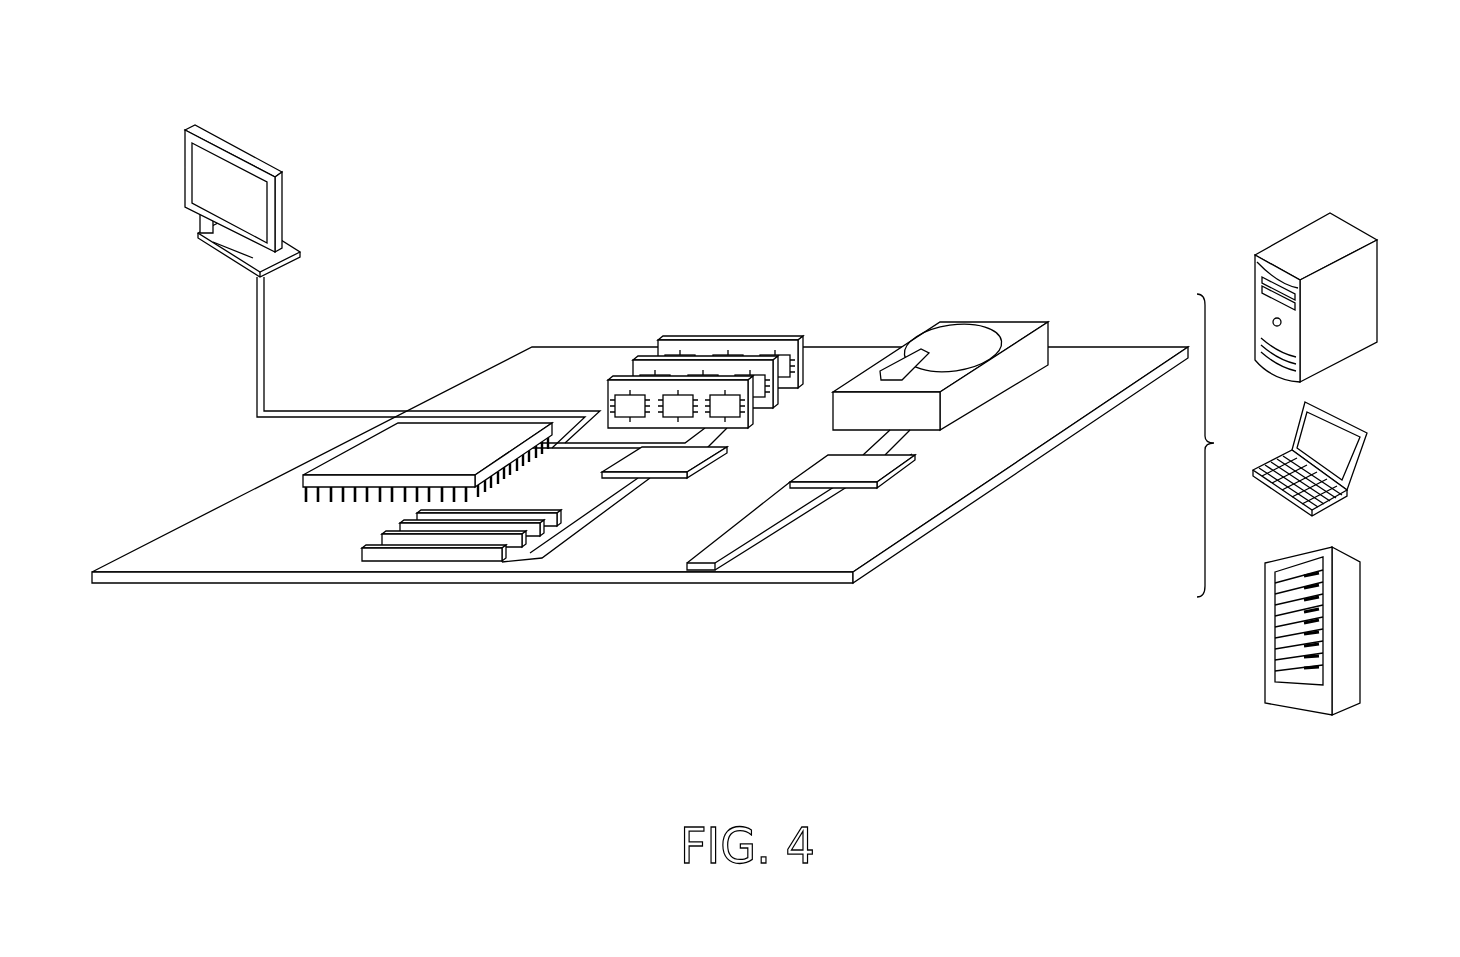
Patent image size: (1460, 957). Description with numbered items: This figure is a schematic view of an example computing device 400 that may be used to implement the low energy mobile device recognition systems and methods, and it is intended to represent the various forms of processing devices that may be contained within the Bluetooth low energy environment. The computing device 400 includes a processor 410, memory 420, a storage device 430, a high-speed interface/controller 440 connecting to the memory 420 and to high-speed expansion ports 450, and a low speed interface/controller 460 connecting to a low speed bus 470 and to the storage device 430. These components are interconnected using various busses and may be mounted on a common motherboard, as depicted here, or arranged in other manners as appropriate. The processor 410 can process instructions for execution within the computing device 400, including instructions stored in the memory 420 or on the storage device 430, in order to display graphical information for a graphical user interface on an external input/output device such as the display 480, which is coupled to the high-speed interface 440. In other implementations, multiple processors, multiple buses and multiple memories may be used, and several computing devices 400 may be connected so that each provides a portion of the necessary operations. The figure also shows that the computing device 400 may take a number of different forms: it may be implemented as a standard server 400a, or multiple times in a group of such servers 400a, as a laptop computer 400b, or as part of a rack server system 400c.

The computing device 400 is at (1010, 100).
The standard server 400a is at (1287, 233).
The laptop computer 400b is at (1347, 423).
The rack server system 400c is at (1353, 613).
The processor 410 is at (302, 475).
The memory 420 is at (722, 340).
The storage device 430 is at (992, 322).
The high-speed interface/controller 440 is at (670, 480).
The high-speed expansion ports 450 is at (363, 549).
The low speed interface/controller 460 is at (840, 463).
The low speed bus 470 is at (722, 575).
The display 480 is at (184, 182).